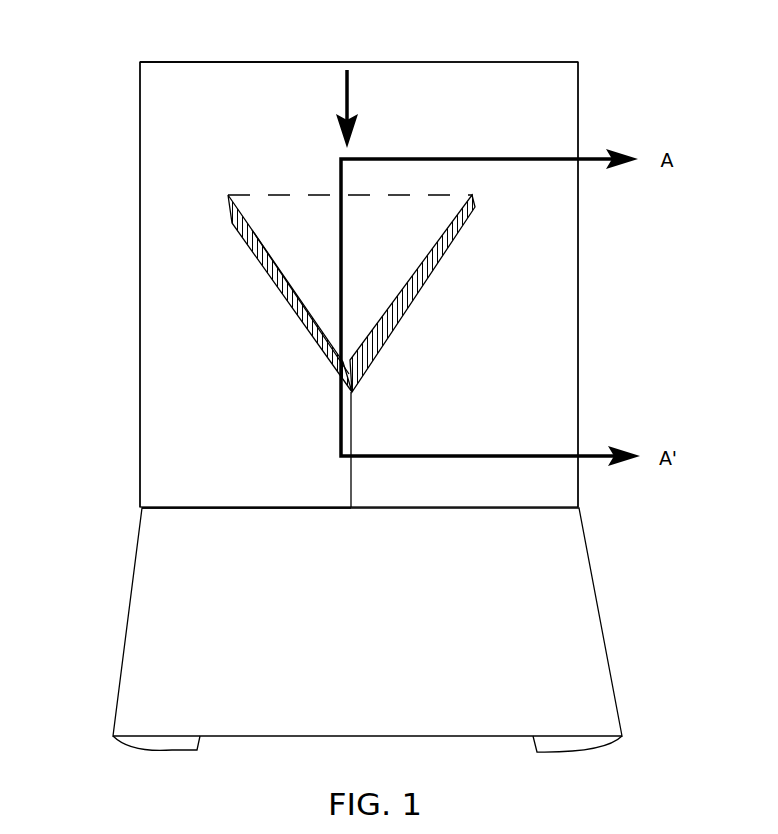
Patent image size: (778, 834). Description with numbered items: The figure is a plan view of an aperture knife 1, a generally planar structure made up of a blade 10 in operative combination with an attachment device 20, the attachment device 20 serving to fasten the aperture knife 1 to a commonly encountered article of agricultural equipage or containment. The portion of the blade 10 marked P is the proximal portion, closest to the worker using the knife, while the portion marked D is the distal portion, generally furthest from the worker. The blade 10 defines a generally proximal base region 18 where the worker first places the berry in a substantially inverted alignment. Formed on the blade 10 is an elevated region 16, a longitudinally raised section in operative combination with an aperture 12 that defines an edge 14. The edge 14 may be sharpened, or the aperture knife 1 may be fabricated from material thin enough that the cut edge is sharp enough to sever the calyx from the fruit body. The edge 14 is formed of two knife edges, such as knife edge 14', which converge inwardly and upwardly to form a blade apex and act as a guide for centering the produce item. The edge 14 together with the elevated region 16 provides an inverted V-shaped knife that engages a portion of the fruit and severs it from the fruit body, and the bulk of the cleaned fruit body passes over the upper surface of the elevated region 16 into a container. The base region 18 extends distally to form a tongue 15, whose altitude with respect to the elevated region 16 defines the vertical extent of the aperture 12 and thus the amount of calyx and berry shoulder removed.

The aperture knife 1 is at (93, 209).
The blade 10 is at (157, 358).
The aperture 12 is at (352, 351).
The edge 14 is at (352, 293).
The knife edge 14' is at (272, 293).
The tongue 15 is at (287, 205).
The elevated region 16 is at (513, 422).
The base region 18 is at (463, 77).
The attachment device 20 is at (140, 598).
The proximal portion P is at (193, 75).
The distal portion D is at (242, 497).